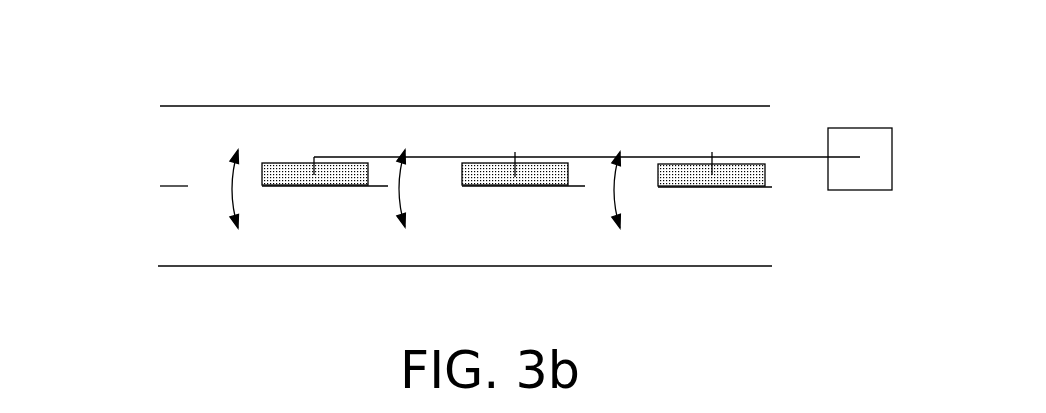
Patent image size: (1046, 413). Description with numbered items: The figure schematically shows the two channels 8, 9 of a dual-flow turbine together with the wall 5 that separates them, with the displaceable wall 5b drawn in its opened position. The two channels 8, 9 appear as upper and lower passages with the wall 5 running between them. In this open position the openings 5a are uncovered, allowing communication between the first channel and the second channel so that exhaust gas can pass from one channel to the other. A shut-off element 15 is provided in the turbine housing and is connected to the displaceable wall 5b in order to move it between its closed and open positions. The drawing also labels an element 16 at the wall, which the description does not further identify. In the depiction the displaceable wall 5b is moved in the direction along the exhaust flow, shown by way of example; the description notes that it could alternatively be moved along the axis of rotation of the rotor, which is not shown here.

The wall 5 is at (168, 188).
The openings 5a is at (432, 182).
The displaceable wall 5b is at (672, 165).
The channel 8 is at (643, 240).
The channel 9 is at (205, 121).
The shut-off element 15 is at (850, 135).
The electrode element 16 is at (316, 172).